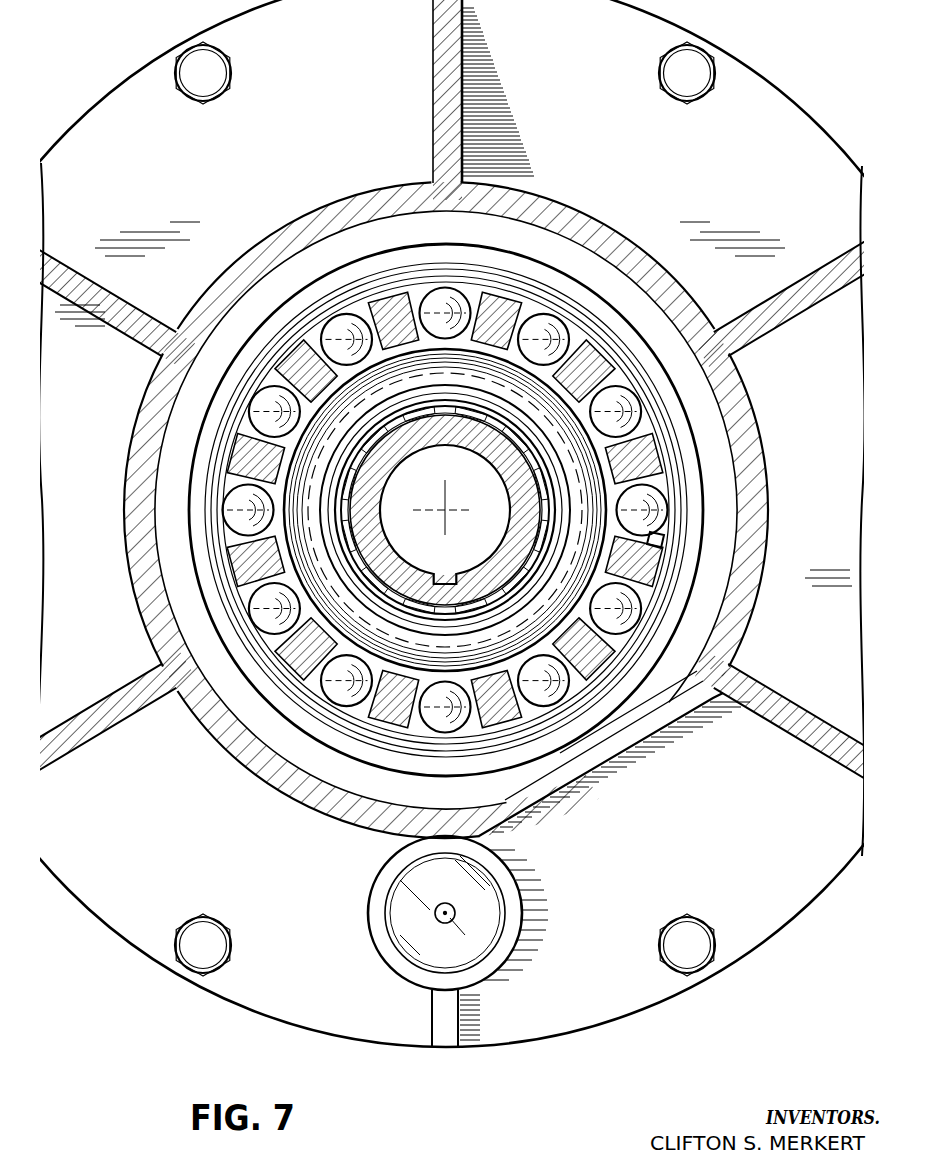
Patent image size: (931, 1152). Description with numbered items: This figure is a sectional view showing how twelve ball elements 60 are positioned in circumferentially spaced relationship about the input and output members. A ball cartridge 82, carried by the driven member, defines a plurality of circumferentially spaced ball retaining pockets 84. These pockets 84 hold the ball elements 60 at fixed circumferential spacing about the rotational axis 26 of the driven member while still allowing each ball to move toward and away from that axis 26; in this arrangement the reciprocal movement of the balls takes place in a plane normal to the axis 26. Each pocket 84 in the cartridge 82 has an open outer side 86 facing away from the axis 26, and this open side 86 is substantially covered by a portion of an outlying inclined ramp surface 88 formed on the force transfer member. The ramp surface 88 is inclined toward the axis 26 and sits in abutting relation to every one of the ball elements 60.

The rotational axis 26 is at (445, 522).
The ball elements 60 is at (632, 508).
The ball cartridge 82 is at (598, 672).
The ball retaining pockets 84 is at (652, 565).
The open outer side 86 is at (657, 538).
The inclined ramp surface 88 is at (632, 647).